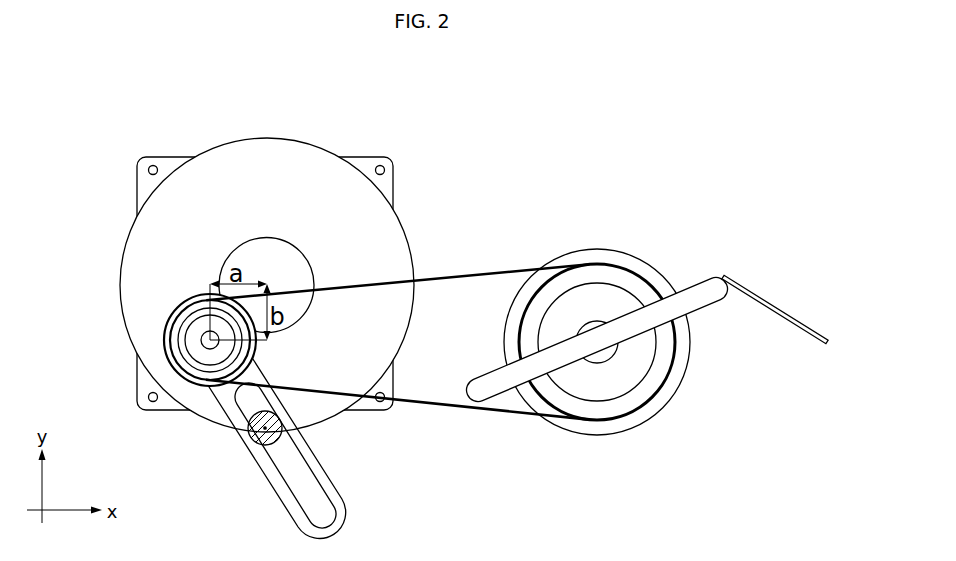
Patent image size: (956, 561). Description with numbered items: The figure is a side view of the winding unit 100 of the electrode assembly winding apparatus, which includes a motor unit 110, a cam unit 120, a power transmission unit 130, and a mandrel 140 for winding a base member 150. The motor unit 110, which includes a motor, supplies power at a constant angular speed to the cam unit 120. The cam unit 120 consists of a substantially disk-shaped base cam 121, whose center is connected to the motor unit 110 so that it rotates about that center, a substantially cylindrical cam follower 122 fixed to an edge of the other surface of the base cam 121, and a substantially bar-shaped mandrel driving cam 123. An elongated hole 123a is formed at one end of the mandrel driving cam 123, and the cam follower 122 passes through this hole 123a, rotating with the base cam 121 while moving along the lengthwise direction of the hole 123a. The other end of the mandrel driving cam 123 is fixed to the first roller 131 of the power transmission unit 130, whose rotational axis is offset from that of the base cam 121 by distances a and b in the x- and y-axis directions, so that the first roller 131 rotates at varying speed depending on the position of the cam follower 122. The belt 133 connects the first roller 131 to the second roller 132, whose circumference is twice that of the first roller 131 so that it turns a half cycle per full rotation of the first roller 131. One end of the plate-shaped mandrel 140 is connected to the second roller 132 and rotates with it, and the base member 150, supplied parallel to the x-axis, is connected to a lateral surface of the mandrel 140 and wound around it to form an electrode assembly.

The winding unit 100 is at (68, 67).
The motor unit 110 is at (368, 163).
The cam unit 120 is at (318, 121).
The base cam 121 is at (258, 150).
The cam follower 122 is at (248, 442).
The mandrel driving cam 123 is at (340, 515).
The hole 123a is at (325, 483).
The power transmission unit 130 is at (458, 266).
The first roller 131 is at (165, 329).
The second roller 132 is at (617, 300).
The belt 133 is at (507, 272).
The mandrel 140 is at (693, 282).
The base member 150 is at (797, 315).